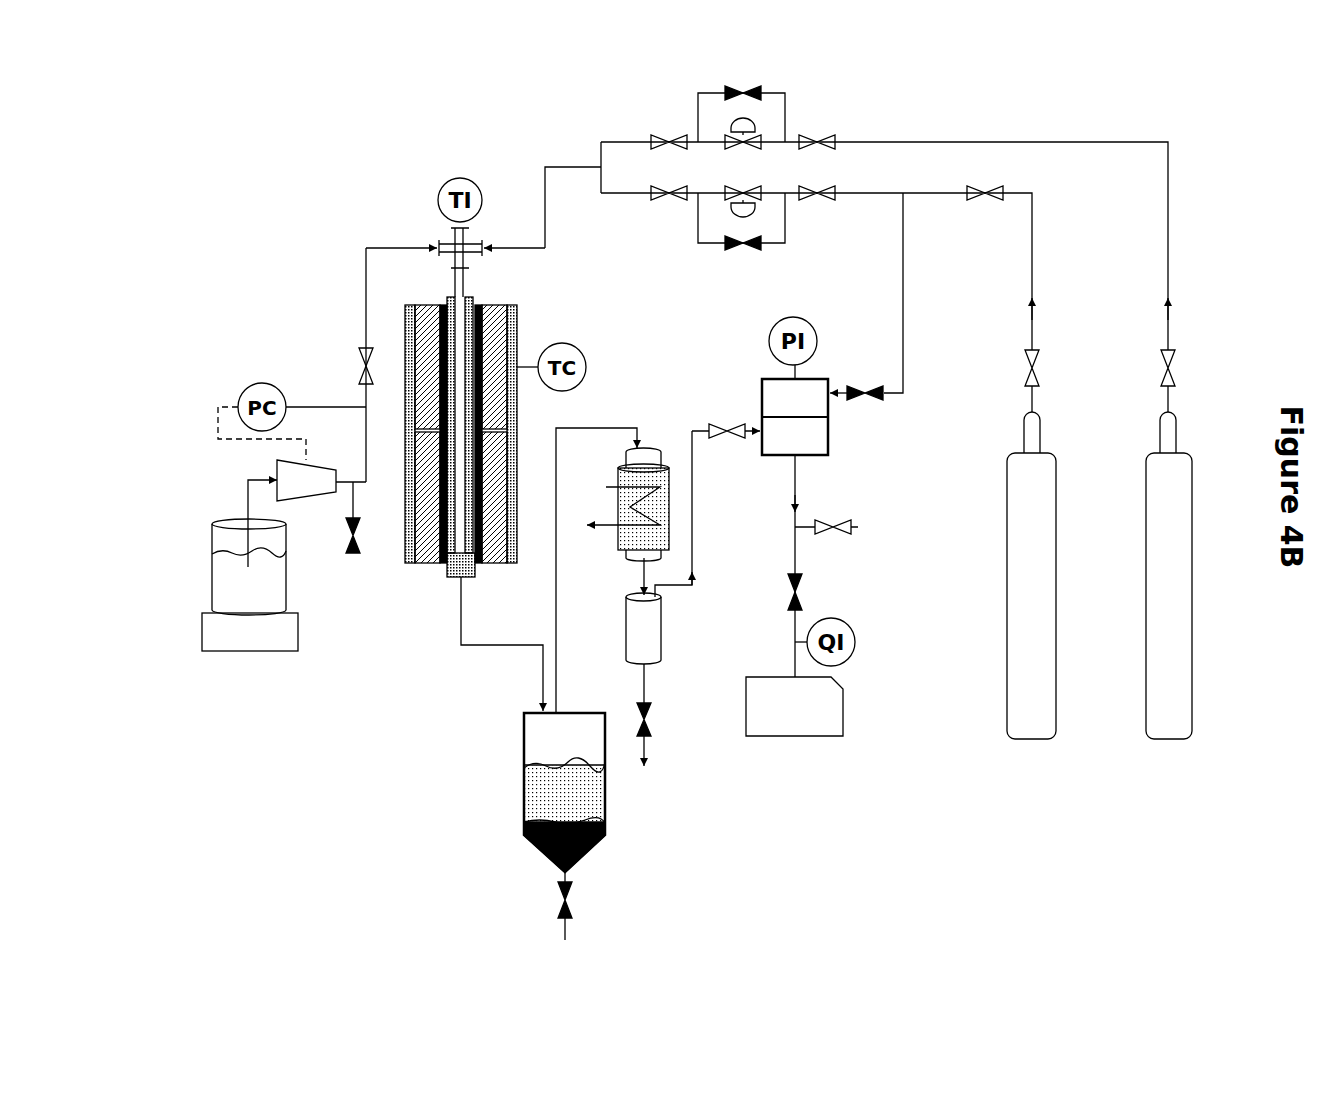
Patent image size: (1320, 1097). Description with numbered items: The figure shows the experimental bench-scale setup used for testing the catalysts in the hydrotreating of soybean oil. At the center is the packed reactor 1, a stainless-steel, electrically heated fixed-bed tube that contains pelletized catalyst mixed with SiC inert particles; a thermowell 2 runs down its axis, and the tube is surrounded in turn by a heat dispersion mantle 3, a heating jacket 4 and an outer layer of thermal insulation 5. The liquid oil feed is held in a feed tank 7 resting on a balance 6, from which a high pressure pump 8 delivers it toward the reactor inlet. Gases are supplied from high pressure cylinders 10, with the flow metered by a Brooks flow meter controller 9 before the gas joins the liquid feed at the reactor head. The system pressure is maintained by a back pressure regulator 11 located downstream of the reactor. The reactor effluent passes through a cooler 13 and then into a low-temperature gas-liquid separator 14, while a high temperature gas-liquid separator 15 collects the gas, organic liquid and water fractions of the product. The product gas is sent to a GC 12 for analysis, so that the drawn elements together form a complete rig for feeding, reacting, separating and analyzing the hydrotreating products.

The packed reactor 1 is at (455, 572).
The thermowell 2 is at (453, 542).
The heat dispersion mantle 3 is at (443, 553).
The heating jacket 4 is at (433, 563).
The thermal insulation 5 is at (405, 540).
The balance 6 is at (250, 652).
The feed tank 7 is at (224, 568).
The high pressure pump 8 is at (276, 468).
The Brooks flow meter controller 9 is at (742, 125).
The high pressure cylinders 10 is at (1168, 742).
The back pressure regulator 11 is at (829, 422).
The GC 12 is at (845, 710).
The cooler 13 is at (665, 559).
The low-temperature gas-liquid separator 14 is at (666, 665).
The high temperature gas-liquid separator 15 is at (607, 774).